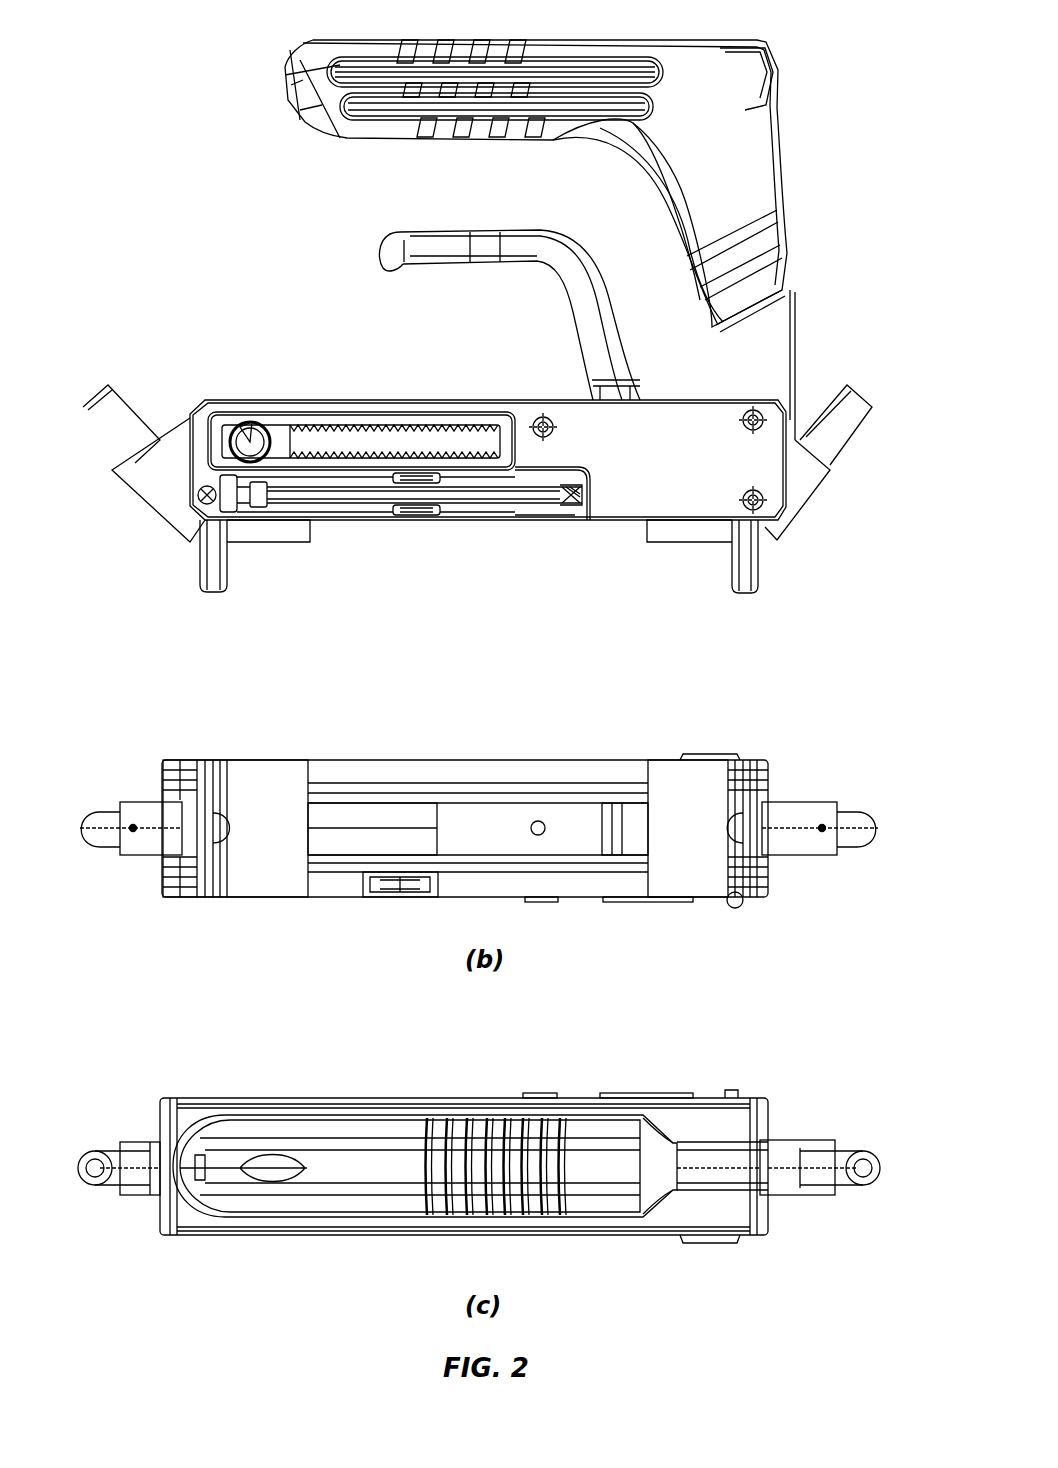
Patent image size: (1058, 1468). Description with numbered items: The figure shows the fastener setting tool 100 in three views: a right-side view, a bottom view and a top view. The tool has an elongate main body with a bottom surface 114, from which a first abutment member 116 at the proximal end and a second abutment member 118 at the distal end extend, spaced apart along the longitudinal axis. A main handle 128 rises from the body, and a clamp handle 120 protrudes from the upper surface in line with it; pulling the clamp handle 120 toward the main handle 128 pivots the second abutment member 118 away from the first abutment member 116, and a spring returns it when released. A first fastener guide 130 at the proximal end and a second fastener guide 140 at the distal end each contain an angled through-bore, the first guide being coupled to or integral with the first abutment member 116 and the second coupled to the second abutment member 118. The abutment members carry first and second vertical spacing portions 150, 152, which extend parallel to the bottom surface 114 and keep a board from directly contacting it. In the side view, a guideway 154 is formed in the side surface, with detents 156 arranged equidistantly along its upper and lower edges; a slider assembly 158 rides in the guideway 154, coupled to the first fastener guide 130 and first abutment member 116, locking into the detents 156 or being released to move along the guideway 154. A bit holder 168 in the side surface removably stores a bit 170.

The fastener setting tool 100 is at (120, 118).
The bottom surface 114 is at (495, 770).
The first abutment member 116 is at (210, 555).
The second abutment member 118 is at (745, 560).
The clamp handle 120 is at (380, 255).
The main handle 128 is at (327, 55).
The first fastener guide 130 is at (135, 1170).
The second fastener guide 140 is at (815, 1140).
The first vertical spacing portion 150 is at (270, 780).
The second vertical spacing portion 152 is at (680, 775).
The guideway 154 is at (380, 428).
The detents 156 is at (455, 455).
The slider assembly 158 is at (240, 420).
The bit holder 168 is at (490, 505).
The bit 170 is at (370, 490).